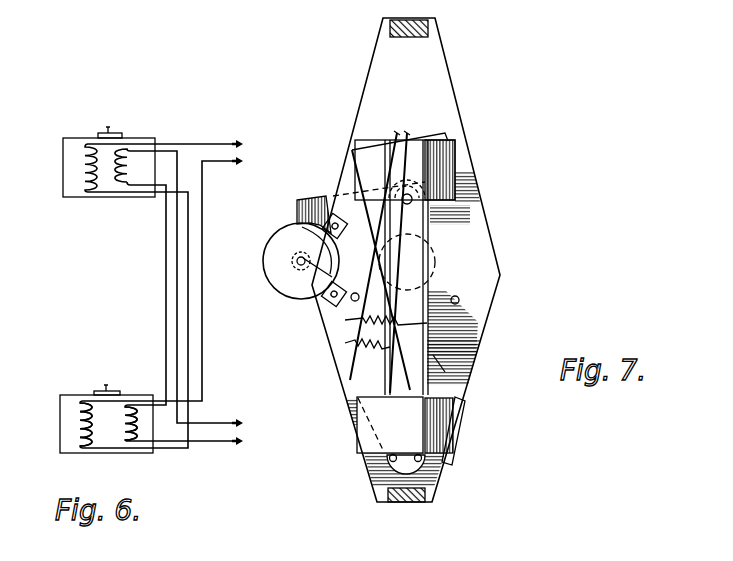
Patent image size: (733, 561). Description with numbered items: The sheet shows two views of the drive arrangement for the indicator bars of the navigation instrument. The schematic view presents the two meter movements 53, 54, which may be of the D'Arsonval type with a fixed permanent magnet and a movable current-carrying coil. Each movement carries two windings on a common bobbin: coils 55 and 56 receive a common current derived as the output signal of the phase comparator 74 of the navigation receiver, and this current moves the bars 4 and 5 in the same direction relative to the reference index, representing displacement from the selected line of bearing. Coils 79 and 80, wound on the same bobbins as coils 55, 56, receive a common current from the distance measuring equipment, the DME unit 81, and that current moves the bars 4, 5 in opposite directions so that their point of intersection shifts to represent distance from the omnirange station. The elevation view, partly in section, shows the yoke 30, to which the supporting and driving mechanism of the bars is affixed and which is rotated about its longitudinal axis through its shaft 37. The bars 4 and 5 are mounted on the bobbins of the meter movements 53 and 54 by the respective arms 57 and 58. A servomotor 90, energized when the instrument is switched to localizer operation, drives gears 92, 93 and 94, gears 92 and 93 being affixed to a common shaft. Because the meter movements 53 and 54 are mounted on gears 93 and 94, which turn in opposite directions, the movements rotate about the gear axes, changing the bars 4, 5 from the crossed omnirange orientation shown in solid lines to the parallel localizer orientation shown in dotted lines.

In FIG. 6, the meter movement 53 is at (69, 134).
In FIG. 7, the meter movement 53 is at (459, 149).
In FIG. 6, the meter movement 54 is at (66, 391).
In FIG. 7, the meter movement 54 is at (457, 400).
In FIG. 6, the coil 55 is at (127, 148).
In FIG. 6, the coil 56 is at (126, 406).
In FIG. 6, the arm 57 is at (108, 126).
In FIG. 6, the arm 58 is at (106, 385).
In FIG. 6, the coil 79 is at (85, 160).
In FIG. 6, the coil 80 is at (80, 418).
In FIG. 6, the DME unit 81 is at (284, 153).
In FIG. 6, the phase comparator 74 is at (294, 474).
In FIG. 7, the yoke 30 is at (497, 273).
In FIG. 7, the shaft 37 is at (433, 262).
In FIG. 7, the servomotor 90 is at (284, 278).
In FIG. 7, the gear 92 is at (317, 197).
In FIG. 7, the gear 93 is at (345, 320).
In FIG. 7, the gear 94 is at (345, 343).
In FIG. 7, the bar 4 is at (350, 378).
In FIG. 7, the bar 5 is at (435, 358).